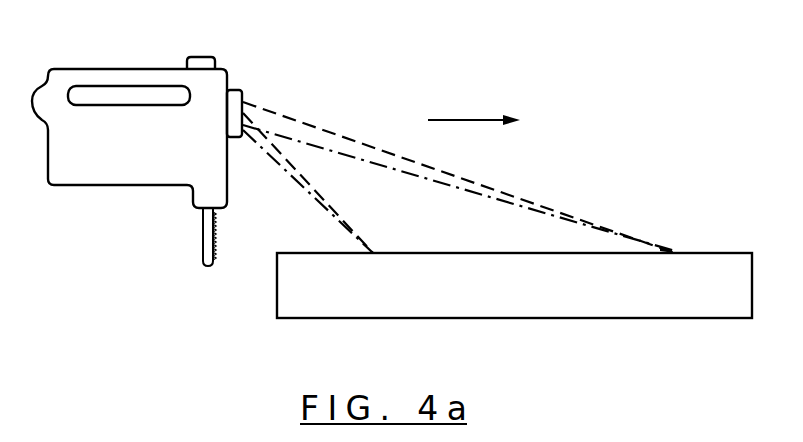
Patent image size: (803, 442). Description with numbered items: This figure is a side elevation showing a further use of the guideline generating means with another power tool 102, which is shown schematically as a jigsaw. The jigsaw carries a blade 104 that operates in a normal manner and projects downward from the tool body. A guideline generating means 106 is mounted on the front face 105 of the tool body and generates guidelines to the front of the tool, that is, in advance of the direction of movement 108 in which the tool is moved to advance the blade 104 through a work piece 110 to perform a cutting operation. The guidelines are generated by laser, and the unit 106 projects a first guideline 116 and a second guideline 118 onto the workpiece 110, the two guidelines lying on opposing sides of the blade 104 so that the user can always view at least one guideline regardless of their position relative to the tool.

The power tool 102 is at (115, 167).
The blade 104 is at (200, 235).
The front face 105 is at (233, 170).
The guideline generating means 106 is at (232, 90).
The direction of movement 108 is at (458, 120).
The work piece 110 is at (517, 295).
The first guideline 116 is at (320, 197).
The second guideline 118 is at (312, 133).